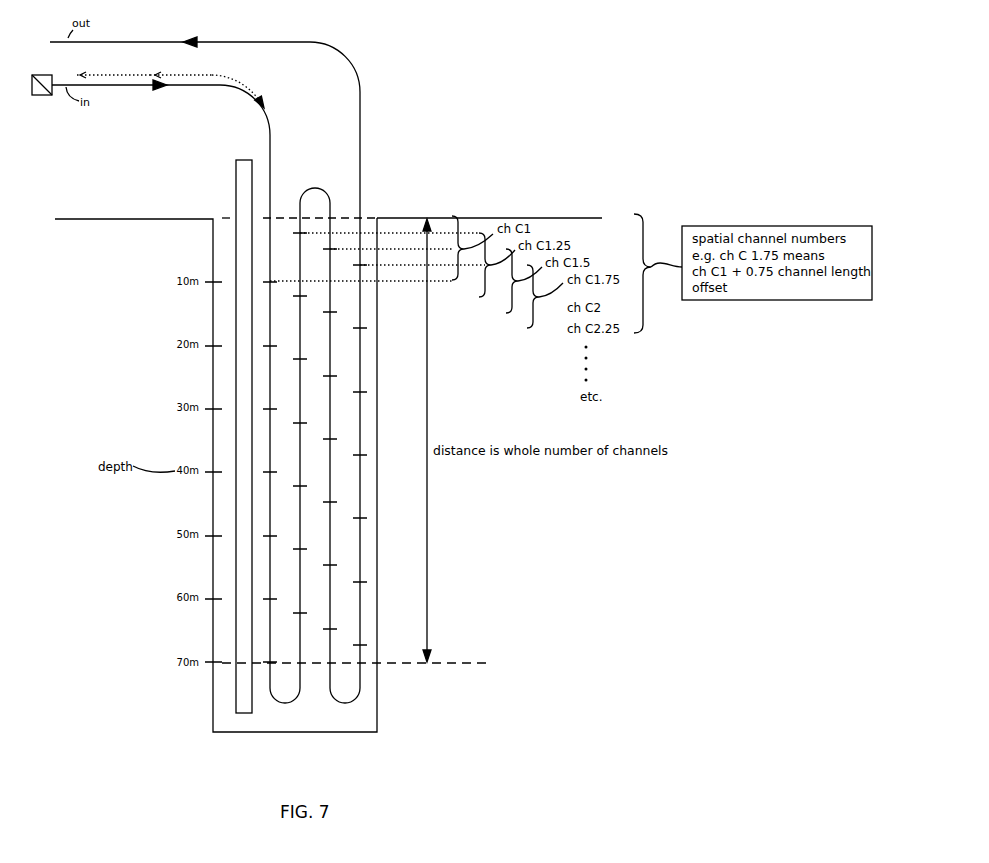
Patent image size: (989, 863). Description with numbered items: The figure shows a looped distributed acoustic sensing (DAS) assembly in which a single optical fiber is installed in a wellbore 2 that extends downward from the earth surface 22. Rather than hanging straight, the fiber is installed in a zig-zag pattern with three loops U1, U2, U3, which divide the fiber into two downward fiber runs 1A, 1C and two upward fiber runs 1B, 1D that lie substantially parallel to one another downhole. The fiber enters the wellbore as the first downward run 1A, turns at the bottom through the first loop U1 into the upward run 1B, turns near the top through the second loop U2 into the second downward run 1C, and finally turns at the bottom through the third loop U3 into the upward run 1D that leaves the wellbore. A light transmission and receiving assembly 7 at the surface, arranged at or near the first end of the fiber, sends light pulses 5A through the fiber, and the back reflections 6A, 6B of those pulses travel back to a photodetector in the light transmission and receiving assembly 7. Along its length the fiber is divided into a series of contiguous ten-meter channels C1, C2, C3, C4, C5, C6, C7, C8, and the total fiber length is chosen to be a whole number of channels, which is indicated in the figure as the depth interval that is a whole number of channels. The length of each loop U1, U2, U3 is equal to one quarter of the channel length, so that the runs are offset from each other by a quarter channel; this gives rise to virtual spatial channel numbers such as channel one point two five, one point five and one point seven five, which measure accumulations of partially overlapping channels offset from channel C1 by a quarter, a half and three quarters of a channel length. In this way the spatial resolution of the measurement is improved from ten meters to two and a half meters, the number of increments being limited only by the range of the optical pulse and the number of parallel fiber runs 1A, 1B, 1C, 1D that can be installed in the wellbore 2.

The light transmission and receiving assembly 7 is at (45, 96).
The back reflection 6A is at (107, 73).
The back reflection 6B is at (185, 73).
The light pulse 5A is at (257, 103).
The downward fiber run 1A is at (267, 133).
The upward fiber run 1B is at (299, 211).
The downward fiber run 1C is at (332, 199).
The upward fiber run 1D is at (361, 170).
The earth surface 22 is at (233, 178).
The wellbore 2 is at (221, 211).
The loop U1 is at (287, 703).
The loop U2 is at (316, 187).
The loop U3 is at (350, 703).
The channel C1 is at (270, 249).
The channel C2 is at (270, 312).
The channel C3 is at (270, 375).
The channel C4 is at (270, 438).
The channel C5 is at (270, 503).
The channel C6 is at (270, 568).
The channel C7 is at (270, 631).
The channel C8 is at (270, 684).